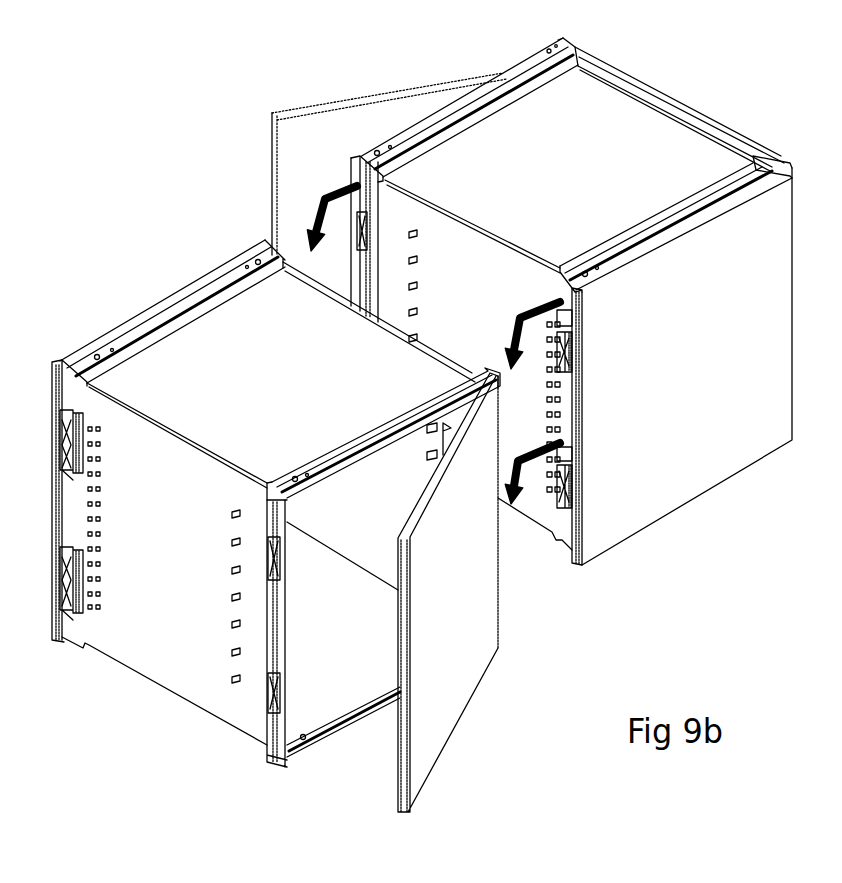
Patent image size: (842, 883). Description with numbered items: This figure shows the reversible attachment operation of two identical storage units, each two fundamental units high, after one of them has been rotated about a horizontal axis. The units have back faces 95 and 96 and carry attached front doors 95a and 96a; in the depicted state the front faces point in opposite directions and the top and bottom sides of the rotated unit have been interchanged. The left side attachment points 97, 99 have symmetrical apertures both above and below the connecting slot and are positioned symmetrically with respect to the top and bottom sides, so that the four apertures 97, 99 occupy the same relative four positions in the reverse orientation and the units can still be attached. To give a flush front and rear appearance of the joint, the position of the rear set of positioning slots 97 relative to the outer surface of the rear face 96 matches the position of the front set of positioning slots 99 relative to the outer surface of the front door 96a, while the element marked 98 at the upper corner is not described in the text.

The back face 95 is at (150, 307).
The front door 95a is at (448, 695).
The back face 96 is at (658, 248).
The front door 96a is at (357, 98).
The rear set of positioning slots 97 is at (568, 487).
The rail corner 98 is at (778, 155).
The front set of positioning slots 99 is at (385, 305).